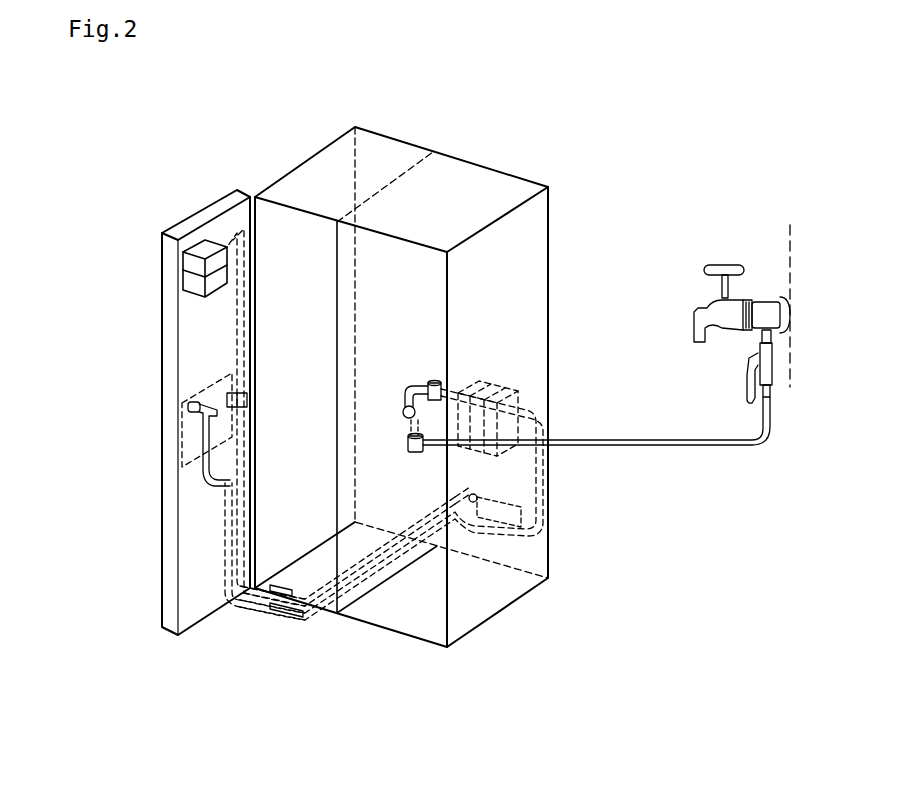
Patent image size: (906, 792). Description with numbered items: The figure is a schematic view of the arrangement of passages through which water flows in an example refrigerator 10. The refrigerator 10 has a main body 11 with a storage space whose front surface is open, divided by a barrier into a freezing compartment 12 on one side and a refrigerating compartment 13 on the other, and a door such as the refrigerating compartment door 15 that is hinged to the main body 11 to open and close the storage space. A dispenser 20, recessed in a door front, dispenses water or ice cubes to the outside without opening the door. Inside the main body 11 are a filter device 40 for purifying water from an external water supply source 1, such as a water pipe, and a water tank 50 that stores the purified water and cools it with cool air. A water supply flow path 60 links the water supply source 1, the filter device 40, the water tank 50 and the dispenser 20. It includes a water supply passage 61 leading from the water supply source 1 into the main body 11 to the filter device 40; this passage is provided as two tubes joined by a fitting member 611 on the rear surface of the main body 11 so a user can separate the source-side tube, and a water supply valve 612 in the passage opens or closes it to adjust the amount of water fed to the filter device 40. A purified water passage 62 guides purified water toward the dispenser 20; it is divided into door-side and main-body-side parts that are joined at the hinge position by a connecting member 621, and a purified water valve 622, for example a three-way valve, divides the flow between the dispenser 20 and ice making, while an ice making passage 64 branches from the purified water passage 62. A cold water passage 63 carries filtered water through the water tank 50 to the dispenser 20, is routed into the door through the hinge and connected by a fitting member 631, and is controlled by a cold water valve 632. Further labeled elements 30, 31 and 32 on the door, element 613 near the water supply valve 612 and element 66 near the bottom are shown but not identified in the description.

The external water supply source 1 is at (735, 230).
The refrigerator 10 is at (268, 135).
The main body 11 is at (457, 167).
The freezing compartment 12 is at (288, 346).
The refrigerating compartment 13 is at (376, 346).
The refrigerating compartment door 15 is at (180, 592).
The dispenser 20 is at (185, 445).
The ice maker assembly 30 is at (117, 264).
The ice maker 31 is at (183, 262).
The ice bank 32 is at (183, 283).
The filter device 40 is at (516, 372).
The water tank 50 is at (538, 440).
The water supply flow path 60 is at (545, 698).
The water supply passage 61 is at (607, 446).
The fitting member 611 is at (423, 440).
The water supply valve 612 is at (436, 383).
The valve fitting 613 is at (420, 392).
The purified water passage 62 is at (340, 603).
The second pipe connector 621 is at (275, 605).
The purified water valve 622 is at (236, 392).
The cold water passage 63 is at (362, 582).
The fitting member 631 is at (298, 613).
The cold water valve 632 is at (476, 494).
The ice making passage 64 is at (247, 590).
The sixth water pipe 66 is at (228, 596).